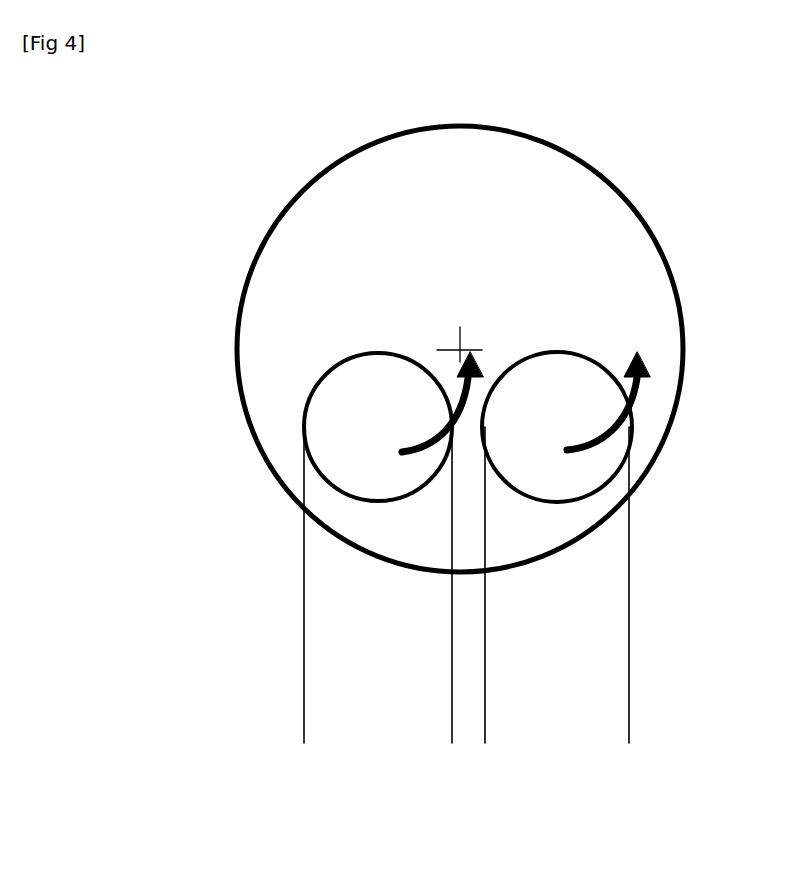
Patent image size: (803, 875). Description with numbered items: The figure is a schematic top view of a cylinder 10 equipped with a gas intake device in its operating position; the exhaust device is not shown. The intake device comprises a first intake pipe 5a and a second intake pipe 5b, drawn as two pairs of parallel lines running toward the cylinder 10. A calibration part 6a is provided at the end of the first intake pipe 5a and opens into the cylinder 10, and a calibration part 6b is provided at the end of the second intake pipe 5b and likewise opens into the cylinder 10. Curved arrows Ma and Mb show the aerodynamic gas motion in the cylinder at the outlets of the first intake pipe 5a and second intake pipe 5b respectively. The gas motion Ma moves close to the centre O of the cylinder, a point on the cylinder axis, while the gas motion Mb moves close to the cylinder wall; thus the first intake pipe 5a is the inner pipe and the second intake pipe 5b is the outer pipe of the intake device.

The cylinder 10 is at (378, 349).
The calibration part 6a is at (285, 427).
The calibration part 6b is at (614, 427).
The first intake pipe 5a is at (278, 585).
The second intake pipe 5b is at (606, 585).
The centre of the cylinder O is at (449, 326).
The aerodynamic gas motion Ma is at (470, 383).
The aerodynamic gas motion Mb is at (621, 379).